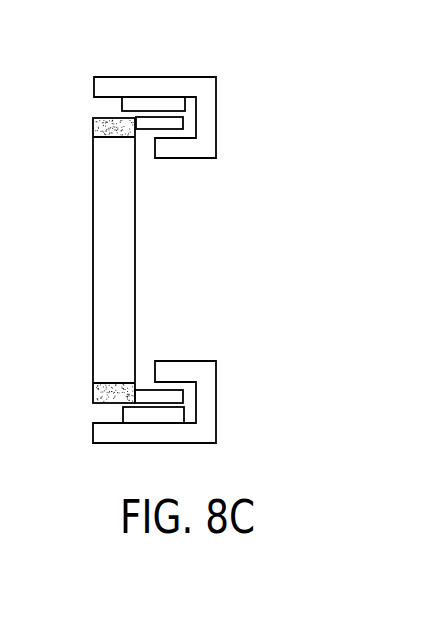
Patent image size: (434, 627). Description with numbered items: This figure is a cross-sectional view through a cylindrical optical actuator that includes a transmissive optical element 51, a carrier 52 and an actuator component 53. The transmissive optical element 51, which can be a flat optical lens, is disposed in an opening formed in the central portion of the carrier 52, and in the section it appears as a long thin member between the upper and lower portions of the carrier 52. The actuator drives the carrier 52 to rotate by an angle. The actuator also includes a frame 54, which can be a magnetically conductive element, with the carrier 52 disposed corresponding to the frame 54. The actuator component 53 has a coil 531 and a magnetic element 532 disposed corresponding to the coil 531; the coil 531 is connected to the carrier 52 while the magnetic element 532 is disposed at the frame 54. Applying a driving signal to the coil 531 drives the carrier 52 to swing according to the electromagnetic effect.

The transmissive optical element 51 is at (127, 245).
The carrier 52 is at (95, 130).
The actuator component 53 is at (205, 121).
The coil 531 is at (183, 393).
The magnetic element 532 is at (183, 413).
The frame 54 is at (178, 85).